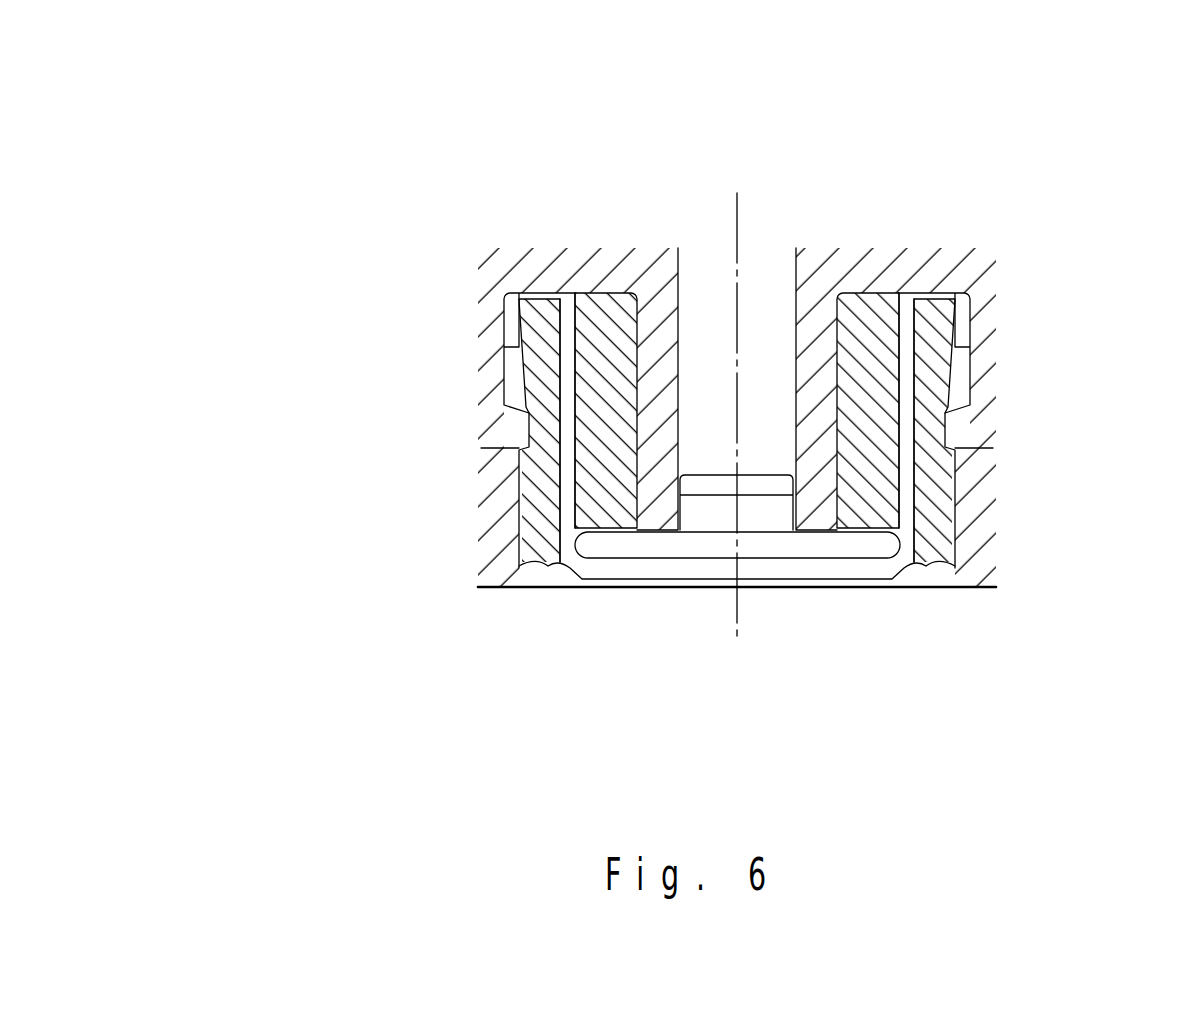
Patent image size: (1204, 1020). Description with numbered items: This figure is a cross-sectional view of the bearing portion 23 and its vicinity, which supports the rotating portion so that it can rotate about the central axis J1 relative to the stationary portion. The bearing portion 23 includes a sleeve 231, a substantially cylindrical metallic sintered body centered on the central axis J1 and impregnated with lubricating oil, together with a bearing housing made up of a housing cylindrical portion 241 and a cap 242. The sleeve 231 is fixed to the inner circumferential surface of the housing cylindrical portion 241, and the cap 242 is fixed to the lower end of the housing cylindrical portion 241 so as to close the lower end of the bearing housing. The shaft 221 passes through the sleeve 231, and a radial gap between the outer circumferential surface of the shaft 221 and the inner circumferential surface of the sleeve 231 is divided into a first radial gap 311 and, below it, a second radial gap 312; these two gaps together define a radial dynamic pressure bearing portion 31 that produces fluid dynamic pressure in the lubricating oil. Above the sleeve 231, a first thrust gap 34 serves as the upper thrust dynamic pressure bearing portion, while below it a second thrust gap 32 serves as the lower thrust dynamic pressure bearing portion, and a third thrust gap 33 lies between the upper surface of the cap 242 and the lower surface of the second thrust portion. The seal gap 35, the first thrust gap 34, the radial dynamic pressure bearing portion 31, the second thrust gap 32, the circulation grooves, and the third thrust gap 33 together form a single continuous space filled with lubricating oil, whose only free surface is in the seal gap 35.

The bearing portion 23 is at (388, 222).
The shaft 221 is at (810, 363).
The sleeve 231 is at (857, 367).
The housing cylindrical portion 241 is at (945, 517).
The cap 242 is at (797, 585).
The radial dynamic pressure bearing portion 31 is at (263, 449).
The first radial gap 311 is at (634, 338).
The second radial gap 312 is at (633, 467).
The second thrust gap 32 is at (865, 532).
The third thrust gap 33 is at (627, 568).
The first thrust gap 34 is at (602, 290).
The seal gap 35 is at (963, 325).
The central axis J1 is at (735, 218).